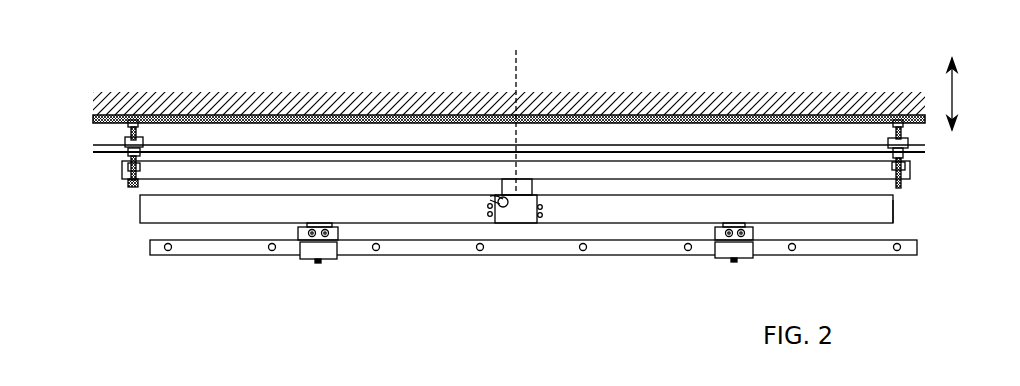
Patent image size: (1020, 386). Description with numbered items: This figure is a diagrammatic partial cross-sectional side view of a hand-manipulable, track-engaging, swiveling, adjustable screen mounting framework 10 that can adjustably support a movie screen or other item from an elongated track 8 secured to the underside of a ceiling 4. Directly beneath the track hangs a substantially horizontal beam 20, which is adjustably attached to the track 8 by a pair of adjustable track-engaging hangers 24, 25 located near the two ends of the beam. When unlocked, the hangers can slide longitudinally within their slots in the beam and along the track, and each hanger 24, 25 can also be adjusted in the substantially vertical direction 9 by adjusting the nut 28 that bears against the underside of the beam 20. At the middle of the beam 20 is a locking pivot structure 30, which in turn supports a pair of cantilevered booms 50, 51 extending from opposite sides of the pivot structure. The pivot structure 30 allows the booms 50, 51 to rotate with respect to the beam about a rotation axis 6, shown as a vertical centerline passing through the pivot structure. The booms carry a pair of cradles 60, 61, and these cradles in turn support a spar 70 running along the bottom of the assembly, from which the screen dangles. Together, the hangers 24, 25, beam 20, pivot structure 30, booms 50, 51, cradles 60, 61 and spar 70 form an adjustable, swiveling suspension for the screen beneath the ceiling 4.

The ceiling 4 is at (262, 106).
The rotation axis 6 is at (520, 62).
The elongated track 8 is at (471, 132).
The substantially vertical direction 9 is at (950, 82).
The screen mounting framework 10 is at (430, 298).
The beam 20 is at (660, 175).
The track-engaging hanger 24 is at (128, 132).
The track-engaging hanger 25 is at (893, 120).
The nut 28 is at (905, 170).
The locking pivot structure 30 is at (520, 215).
The cantilevered boom 50 is at (152, 210).
The cantilevered boom 51 is at (893, 218).
The cradle 60 is at (305, 258).
The cradle 61 is at (723, 258).
The spar 70 is at (152, 247).